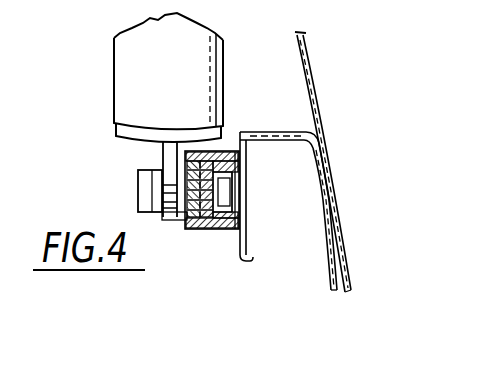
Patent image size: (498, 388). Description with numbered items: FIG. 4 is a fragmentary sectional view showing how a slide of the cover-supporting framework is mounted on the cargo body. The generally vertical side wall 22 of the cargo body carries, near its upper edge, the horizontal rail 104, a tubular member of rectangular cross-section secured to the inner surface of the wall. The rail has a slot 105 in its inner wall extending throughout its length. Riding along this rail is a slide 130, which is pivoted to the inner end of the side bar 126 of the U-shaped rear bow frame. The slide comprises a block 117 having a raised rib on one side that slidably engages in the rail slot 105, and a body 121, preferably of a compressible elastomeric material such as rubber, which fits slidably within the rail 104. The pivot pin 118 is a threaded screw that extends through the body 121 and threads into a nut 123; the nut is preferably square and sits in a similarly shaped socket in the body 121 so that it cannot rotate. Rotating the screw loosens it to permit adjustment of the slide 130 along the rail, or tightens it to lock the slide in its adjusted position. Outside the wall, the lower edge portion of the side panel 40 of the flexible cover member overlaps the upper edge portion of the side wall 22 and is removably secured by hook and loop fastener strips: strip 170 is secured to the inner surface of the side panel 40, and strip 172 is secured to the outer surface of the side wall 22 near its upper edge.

The side bar 126 is at (118, 46).
The block 117 is at (163, 152).
The pivot pin 118 is at (138, 178).
The body 121 is at (203, 146).
The nut 123 is at (245, 174).
The slide 130 is at (189, 225).
The slot 105 is at (198, 228).
The rail 104 is at (219, 233).
The side panel 40 is at (304, 44).
The fastener strip 170 is at (338, 148).
The fastener strip 172 is at (323, 180).
The side wall 22 is at (332, 263).